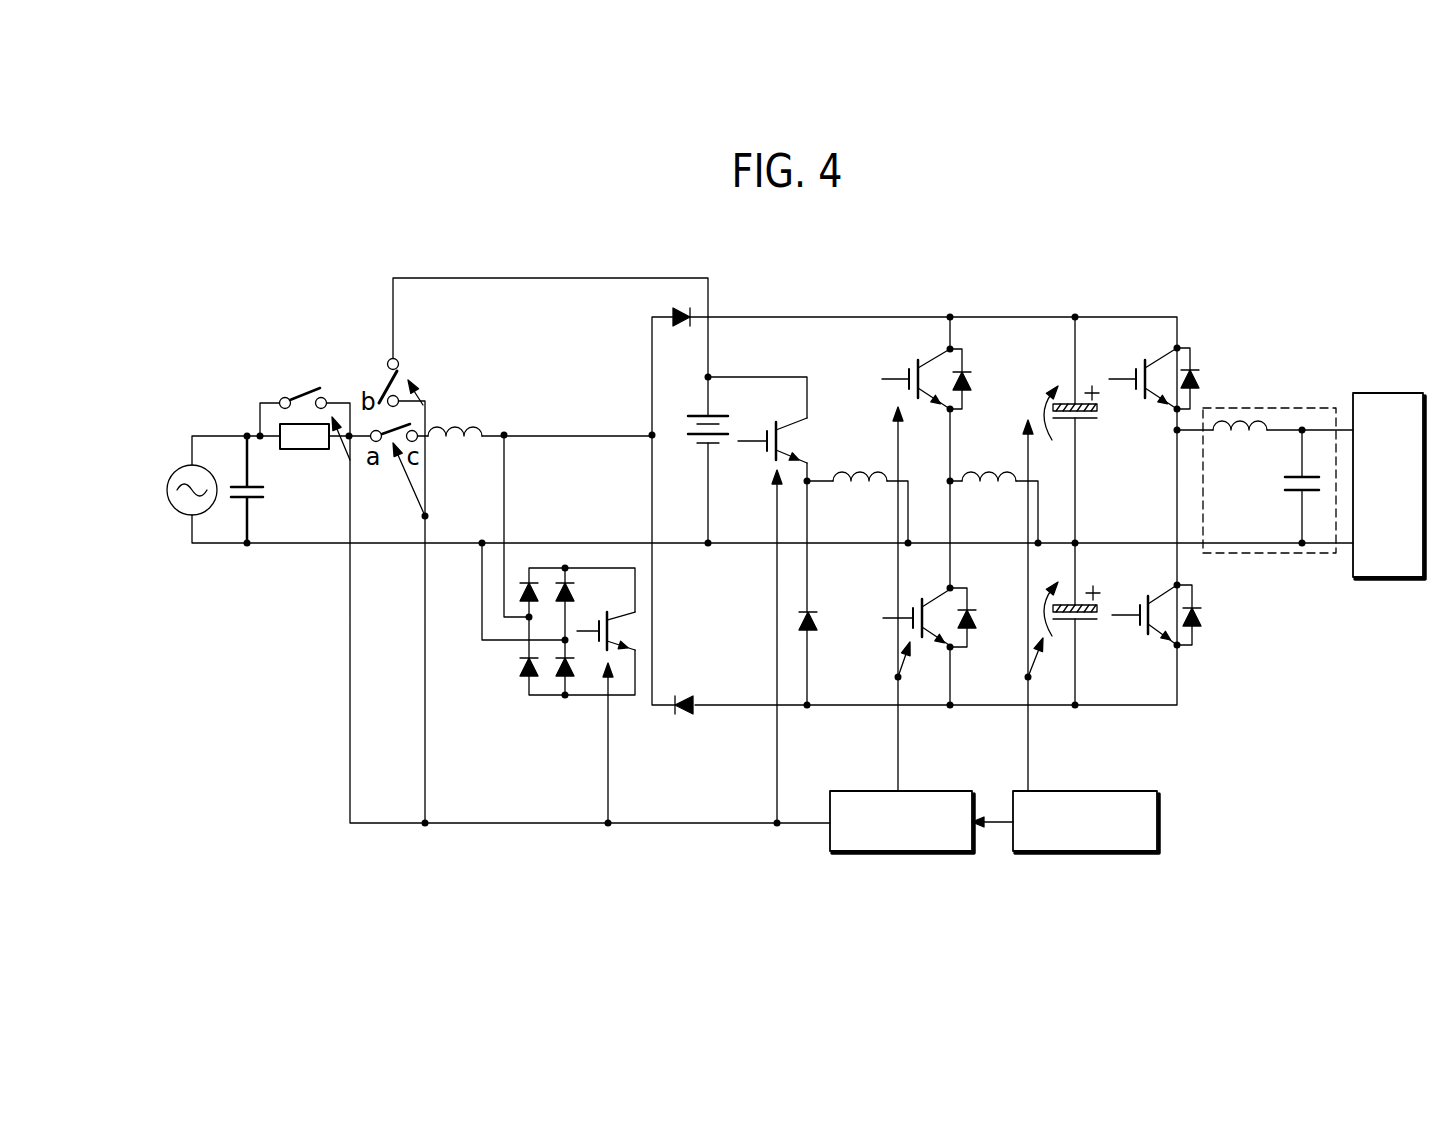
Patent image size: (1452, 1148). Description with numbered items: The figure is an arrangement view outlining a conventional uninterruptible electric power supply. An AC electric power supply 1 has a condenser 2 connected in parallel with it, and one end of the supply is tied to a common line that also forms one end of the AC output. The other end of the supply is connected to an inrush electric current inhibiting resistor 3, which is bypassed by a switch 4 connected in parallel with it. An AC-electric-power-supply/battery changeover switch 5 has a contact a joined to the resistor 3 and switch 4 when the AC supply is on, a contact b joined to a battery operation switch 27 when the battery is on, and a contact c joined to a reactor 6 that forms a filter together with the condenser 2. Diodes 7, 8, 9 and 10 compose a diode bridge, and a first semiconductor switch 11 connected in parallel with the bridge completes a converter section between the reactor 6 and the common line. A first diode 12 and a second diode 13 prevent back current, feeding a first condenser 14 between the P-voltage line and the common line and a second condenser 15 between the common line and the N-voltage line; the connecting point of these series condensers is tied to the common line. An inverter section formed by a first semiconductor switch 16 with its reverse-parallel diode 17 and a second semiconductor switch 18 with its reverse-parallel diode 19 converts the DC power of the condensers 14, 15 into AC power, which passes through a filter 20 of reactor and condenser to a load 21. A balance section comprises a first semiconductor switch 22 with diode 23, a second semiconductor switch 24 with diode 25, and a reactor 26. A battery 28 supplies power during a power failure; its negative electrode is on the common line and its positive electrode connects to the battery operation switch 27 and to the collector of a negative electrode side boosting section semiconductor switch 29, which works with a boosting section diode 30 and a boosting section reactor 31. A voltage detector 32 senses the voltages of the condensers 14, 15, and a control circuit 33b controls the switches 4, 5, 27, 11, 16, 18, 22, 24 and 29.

The AC electric power supply 1 is at (176, 466).
The condenser 2 is at (259, 505).
The inrush electric current inhibiting resistor 3 is at (317, 452).
The switch 4 is at (303, 388).
The AC-electric-power-supply/battery changeover switch 5 is at (402, 417).
The reactor 6 is at (465, 405).
The diode 7 is at (524, 575).
The diode 8 is at (558, 575).
The diode 9 is at (525, 685).
The diode 10 is at (558, 685).
The first semiconductor switch 11 is at (595, 653).
The first diode 12 is at (682, 307).
The second diode 13 is at (684, 722).
The first condenser 14 is at (1084, 424).
The second condenser 15 is at (1087, 625).
The first semiconductor switch of the inverter section 16 is at (1140, 362).
The diode 17 is at (1194, 365).
The second semiconductor switch of the inverter section 18 is at (1140, 594).
The diode 19 is at (1200, 637).
The filter 20 is at (1288, 406).
The load 21 is at (1400, 392).
The first semiconductor switch of the balance section 22 is at (913, 362).
The diode 23 is at (968, 366).
The second semiconductor switch of the balance section 24 is at (913, 593).
The diode 25 is at (975, 598).
The reactor of the balance section 26 is at (983, 462).
The battery operation switch 27 is at (404, 368).
The battery 28 is at (698, 413).
The negative electrode side boosting section semiconductor switch 29 is at (770, 460).
The negative electrode side boosting section diode 30 is at (814, 633).
The negative electrode side boosting section reactor 31 is at (852, 462).
The voltage detector 32 is at (1132, 790).
The control circuit 33b is at (948, 790).